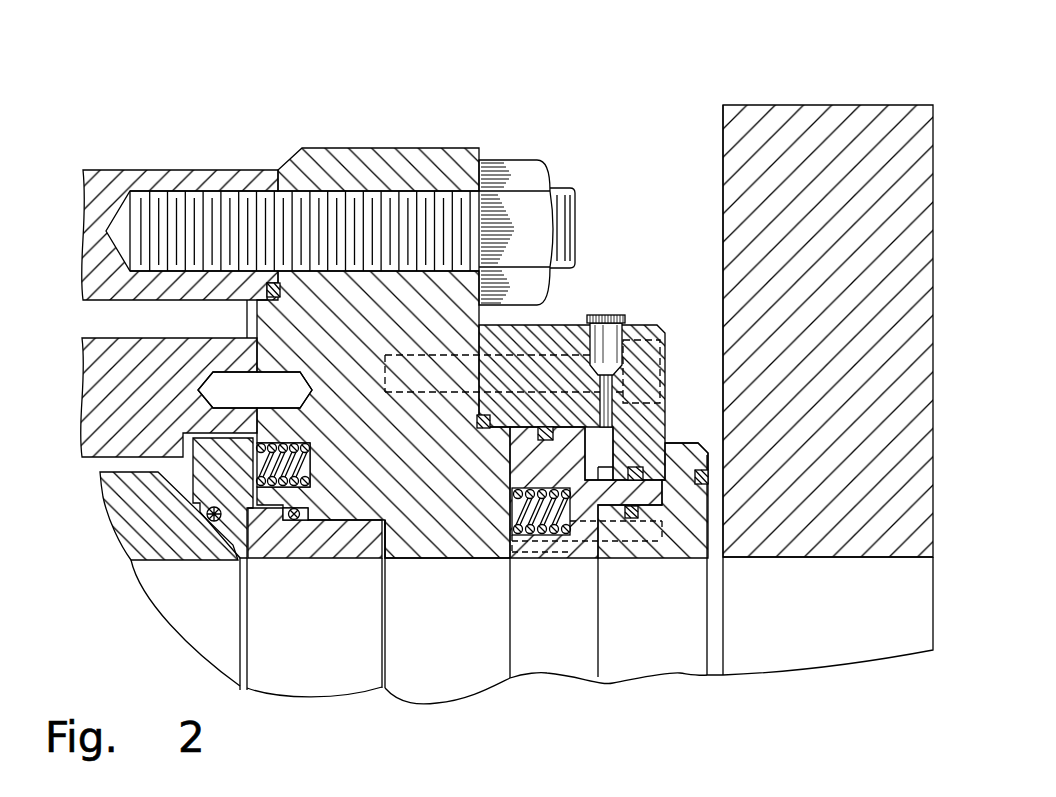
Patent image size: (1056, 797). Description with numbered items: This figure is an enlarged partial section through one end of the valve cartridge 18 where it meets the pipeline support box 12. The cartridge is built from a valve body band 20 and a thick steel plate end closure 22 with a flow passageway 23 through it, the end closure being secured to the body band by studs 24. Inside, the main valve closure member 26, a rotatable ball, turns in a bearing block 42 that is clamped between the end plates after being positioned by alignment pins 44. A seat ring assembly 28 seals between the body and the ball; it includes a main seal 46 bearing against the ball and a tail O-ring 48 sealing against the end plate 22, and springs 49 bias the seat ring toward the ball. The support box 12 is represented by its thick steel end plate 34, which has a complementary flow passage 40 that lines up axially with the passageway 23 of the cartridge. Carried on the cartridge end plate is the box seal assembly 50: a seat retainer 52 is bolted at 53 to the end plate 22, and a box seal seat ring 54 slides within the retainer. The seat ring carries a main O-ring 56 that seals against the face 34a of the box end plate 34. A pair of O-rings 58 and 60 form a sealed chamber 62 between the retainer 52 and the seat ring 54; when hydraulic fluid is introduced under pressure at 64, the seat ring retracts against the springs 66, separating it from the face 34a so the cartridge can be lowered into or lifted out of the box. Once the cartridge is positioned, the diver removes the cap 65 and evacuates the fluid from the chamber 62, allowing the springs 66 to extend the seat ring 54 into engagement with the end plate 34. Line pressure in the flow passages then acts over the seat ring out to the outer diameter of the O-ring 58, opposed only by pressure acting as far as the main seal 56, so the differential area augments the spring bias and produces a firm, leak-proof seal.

The pipeline support box 12 is at (966, 106).
The valve cartridge 18 is at (501, 132).
The valve body band 20 is at (160, 176).
The end closures 22 is at (340, 150).
The flow passageways 23 is at (444, 540).
The studs 24 is at (535, 171).
The main valve closure member 26 is at (130, 522).
The seat ring assembly 28 is at (280, 545).
The end plates 34 is at (912, 295).
The face of end plate 34a is at (722, 176).
The flow passages 40 is at (890, 558).
The bearing block 42 is at (105, 412).
The alignment pins 44 is at (268, 381).
The main seal 46 is at (210, 521).
The tail O-ring 48 is at (298, 522).
The springs 49 is at (312, 458).
The box seal assembly 50 is at (631, 292).
The seat retainer 52 is at (655, 328).
The bolt 53 is at (668, 350).
The box seal seat ring 54 is at (690, 540).
The O-ring 56 is at (702, 482).
The O-ring 58 is at (545, 433).
The O-ring 60 is at (602, 440).
The sealed chamber 62 is at (638, 468).
The hydraulic fluid inlet 64 is at (576, 328).
The cap 65 is at (609, 315).
The springs 66 is at (515, 498).